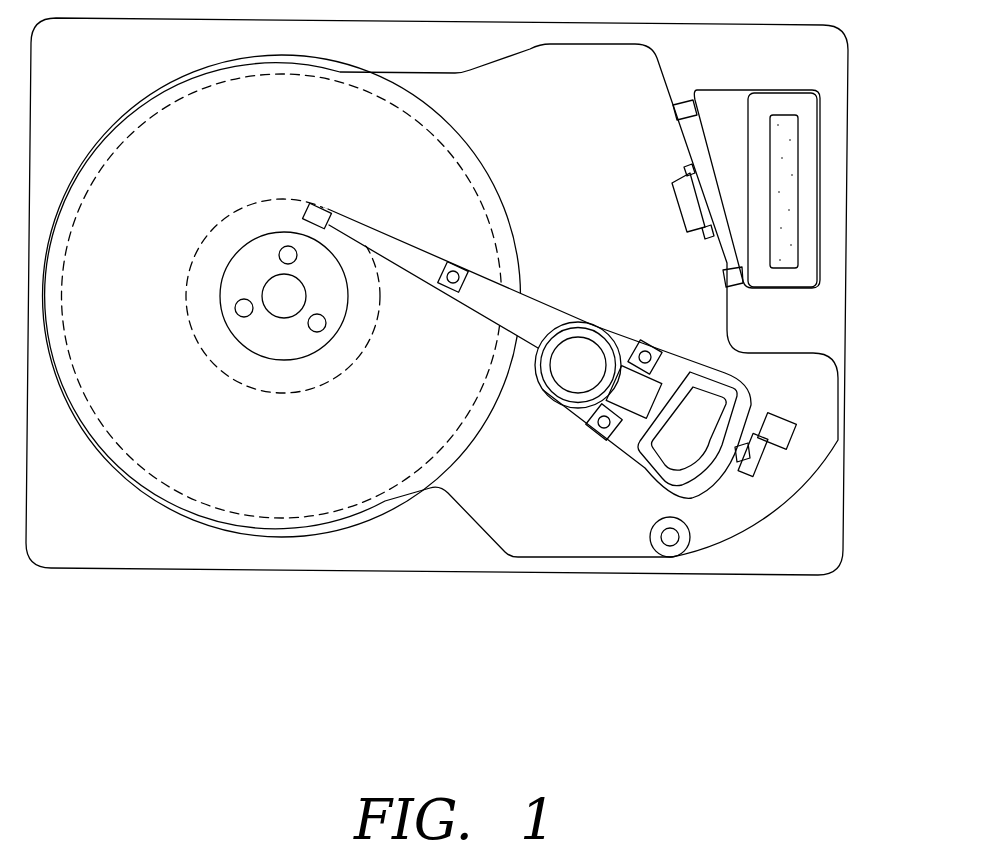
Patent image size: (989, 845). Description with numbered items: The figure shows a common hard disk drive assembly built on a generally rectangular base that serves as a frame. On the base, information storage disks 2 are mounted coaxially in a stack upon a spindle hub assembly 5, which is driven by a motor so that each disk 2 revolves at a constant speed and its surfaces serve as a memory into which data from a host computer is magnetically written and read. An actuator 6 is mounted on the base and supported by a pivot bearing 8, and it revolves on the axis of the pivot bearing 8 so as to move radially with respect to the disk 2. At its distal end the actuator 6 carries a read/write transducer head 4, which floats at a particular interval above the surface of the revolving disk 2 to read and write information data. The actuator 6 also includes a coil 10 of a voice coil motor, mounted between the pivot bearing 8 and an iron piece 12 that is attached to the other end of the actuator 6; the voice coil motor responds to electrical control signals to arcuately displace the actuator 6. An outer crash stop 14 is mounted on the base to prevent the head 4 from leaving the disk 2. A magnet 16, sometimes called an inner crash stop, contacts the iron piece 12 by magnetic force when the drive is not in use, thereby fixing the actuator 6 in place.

The information storage disk 2 is at (238, 498).
The read/write transducer head 4 is at (320, 211).
The spindle hub assembly 5 is at (203, 338).
The actuator 6 is at (542, 277).
The pivot bearing 8 is at (583, 350).
The voice coil motor coil 10 is at (693, 375).
The iron piece 12 is at (762, 462).
The outer crash stop 14 is at (670, 542).
The magnet 16 is at (782, 424).